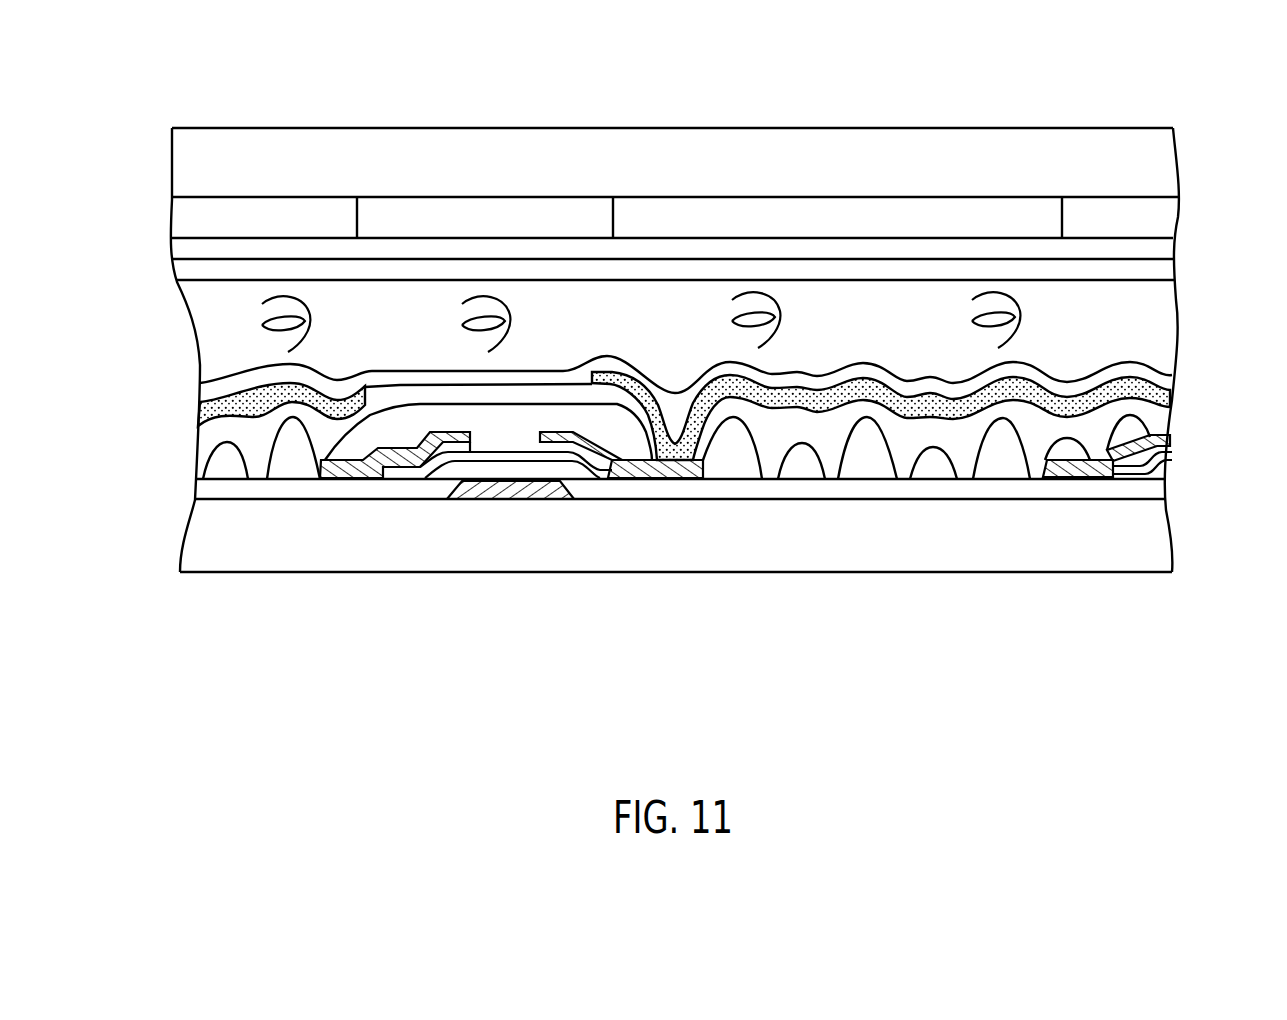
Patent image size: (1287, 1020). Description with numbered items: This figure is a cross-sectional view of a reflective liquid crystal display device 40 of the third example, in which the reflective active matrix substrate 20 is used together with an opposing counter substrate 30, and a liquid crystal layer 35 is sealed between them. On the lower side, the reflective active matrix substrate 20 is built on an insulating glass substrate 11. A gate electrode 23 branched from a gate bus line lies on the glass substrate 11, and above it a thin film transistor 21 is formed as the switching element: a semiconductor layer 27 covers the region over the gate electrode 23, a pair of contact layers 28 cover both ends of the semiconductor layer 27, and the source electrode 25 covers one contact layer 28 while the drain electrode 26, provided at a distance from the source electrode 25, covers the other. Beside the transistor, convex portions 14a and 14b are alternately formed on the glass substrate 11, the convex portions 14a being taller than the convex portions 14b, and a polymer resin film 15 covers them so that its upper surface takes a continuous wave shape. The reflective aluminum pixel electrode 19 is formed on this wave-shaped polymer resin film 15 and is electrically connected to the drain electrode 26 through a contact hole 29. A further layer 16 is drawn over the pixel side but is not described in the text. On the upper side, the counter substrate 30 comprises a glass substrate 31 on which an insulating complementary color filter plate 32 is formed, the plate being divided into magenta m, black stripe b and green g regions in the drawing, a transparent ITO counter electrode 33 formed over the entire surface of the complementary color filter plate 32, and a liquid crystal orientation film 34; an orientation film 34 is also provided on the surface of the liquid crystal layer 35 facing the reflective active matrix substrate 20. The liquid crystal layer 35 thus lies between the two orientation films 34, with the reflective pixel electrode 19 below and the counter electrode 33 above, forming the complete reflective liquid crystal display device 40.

The glass substrate 11 is at (1125, 547).
The convex portions 14a is at (740, 462).
The convex portions 14b is at (937, 465).
The polymer resin film 15 is at (1167, 420).
The alignment layer 16 is at (222, 417).
The pixel electrode 19 is at (1170, 383).
The reflective active matrix substrate 20 is at (143, 388).
The thin film transistor 21 is at (490, 514).
The gate electrode 23 is at (513, 490).
The source electrode 25 is at (333, 470).
The drain electrode 26 is at (680, 470).
The semiconductor layer 27 is at (452, 463).
The contact layers 28 is at (402, 470).
The contact hole 29 is at (677, 388).
The counter substrate 30 is at (143, 120).
The glass substrate 31 is at (1178, 150).
The complementary color filter plate 32 is at (1180, 217).
The counter electrode 33 is at (1178, 242).
The liquid crystal orientation film 34 is at (1178, 262).
The liquid crystal layer 35 is at (213, 332).
The reflective liquid crystal display device 40 is at (738, 637).
The magenta filter m is at (333, 220).
The black stripe b is at (580, 218).
The green filter g is at (838, 215).